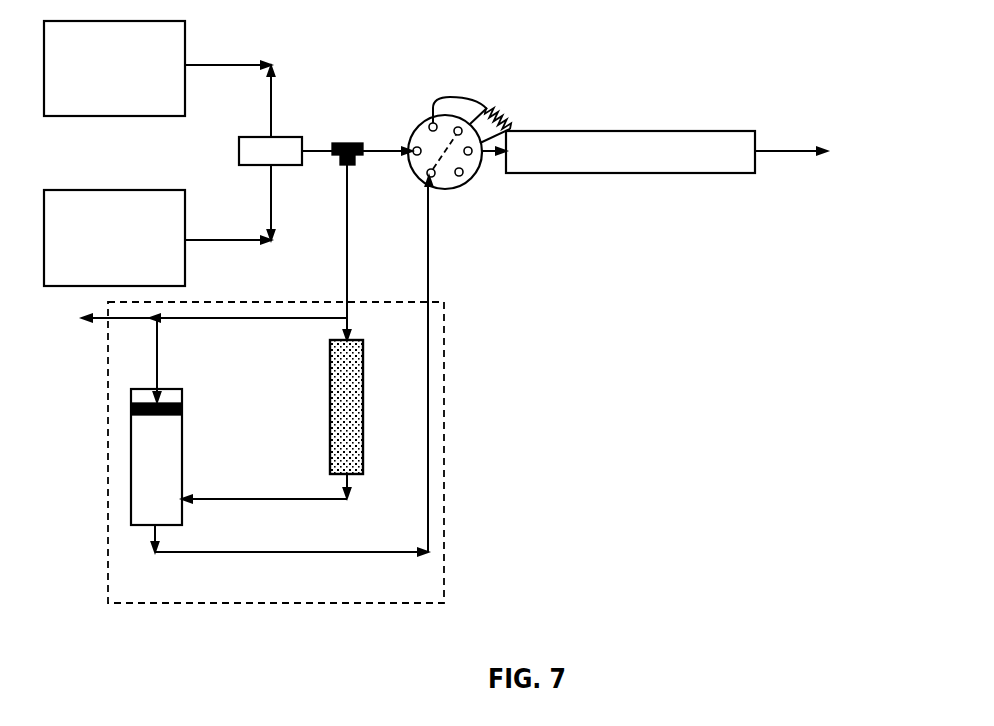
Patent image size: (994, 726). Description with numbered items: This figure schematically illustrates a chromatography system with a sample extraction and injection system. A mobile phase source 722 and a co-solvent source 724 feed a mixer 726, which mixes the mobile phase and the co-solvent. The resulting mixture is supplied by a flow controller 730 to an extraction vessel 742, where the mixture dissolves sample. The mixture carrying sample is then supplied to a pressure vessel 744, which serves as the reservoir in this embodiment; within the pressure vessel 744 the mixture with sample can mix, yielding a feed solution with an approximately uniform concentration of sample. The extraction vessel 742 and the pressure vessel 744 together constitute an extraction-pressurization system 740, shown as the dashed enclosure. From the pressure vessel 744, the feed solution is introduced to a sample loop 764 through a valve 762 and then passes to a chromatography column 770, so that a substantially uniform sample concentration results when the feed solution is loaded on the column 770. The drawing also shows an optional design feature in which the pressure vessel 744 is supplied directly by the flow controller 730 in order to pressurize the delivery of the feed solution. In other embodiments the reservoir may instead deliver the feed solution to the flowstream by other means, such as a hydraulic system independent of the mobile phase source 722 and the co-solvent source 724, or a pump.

The mobile phase source 722 is at (114, 68).
The co-solvent source 724 is at (114, 238).
The mixer 726 is at (270, 151).
The flow controller 730 is at (345, 134).
The extraction-pressurization system 740 is at (206, 613).
The extraction vessel 742 is at (377, 407).
The pressure vessel 744 is at (189, 455).
The valve 762 is at (407, 118).
The sample loop 764 is at (490, 99).
The chromatography column 770 is at (630, 152).